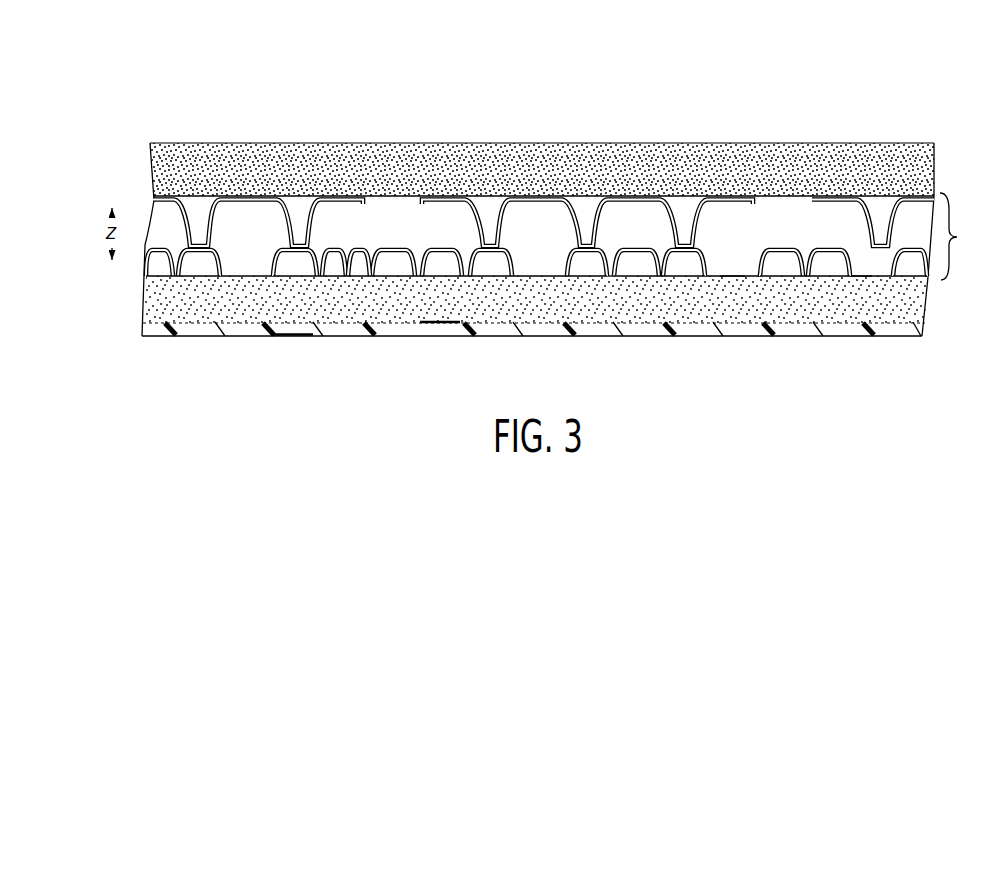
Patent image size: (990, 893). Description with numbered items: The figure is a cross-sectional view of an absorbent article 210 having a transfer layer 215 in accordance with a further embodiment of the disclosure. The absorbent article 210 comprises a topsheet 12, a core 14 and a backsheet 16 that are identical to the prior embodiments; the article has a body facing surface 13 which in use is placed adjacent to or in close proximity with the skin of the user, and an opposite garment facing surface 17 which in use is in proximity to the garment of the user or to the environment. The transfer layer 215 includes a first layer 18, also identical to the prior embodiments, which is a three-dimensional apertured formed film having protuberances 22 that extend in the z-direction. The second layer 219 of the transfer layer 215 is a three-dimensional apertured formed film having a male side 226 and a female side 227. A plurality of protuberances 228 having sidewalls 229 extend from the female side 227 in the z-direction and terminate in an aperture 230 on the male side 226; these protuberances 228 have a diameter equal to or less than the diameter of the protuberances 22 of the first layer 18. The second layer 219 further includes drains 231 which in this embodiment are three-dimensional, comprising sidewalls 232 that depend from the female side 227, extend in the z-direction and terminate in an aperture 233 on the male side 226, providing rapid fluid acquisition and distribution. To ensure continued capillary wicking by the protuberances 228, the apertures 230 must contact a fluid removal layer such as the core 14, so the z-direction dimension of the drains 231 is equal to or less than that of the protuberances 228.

The absorbent article 210 is at (503, 98).
The topsheet 12 is at (345, 147).
The body facing surface 13 is at (401, 139).
The first layer 18 is at (235, 192).
The protuberances 22 is at (510, 217).
The second layer 219 is at (155, 238).
The drains 231 is at (251, 255).
The protuberances 228 is at (337, 254).
The sidewalls 232 is at (369, 248).
The female side 227 is at (443, 241).
The sidewalls 229 is at (625, 251).
The aperture 233 is at (367, 268).
The aperture 230 is at (611, 272).
The male side 226 is at (426, 284).
The core 14 is at (183, 314).
The backsheet 16 is at (222, 334).
The garment facing surface 17 is at (314, 340).
The transfer layer 215 is at (962, 236).